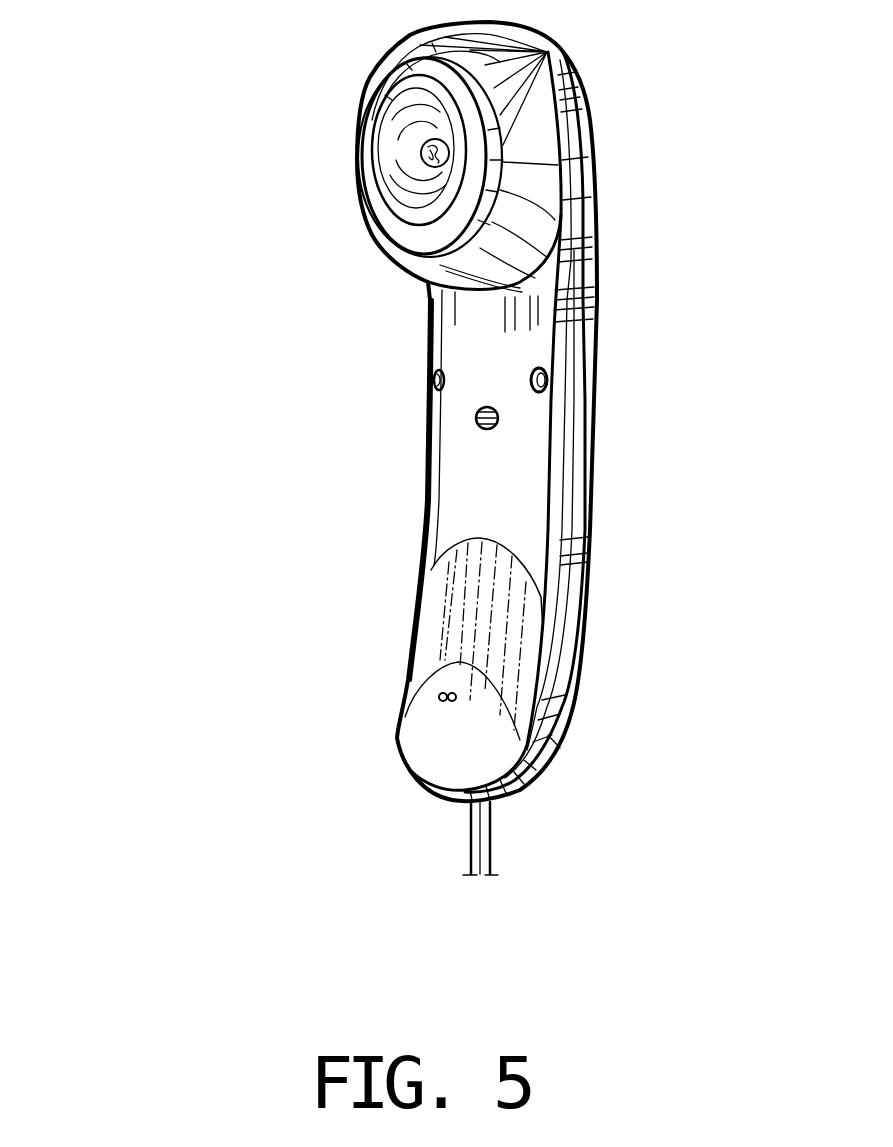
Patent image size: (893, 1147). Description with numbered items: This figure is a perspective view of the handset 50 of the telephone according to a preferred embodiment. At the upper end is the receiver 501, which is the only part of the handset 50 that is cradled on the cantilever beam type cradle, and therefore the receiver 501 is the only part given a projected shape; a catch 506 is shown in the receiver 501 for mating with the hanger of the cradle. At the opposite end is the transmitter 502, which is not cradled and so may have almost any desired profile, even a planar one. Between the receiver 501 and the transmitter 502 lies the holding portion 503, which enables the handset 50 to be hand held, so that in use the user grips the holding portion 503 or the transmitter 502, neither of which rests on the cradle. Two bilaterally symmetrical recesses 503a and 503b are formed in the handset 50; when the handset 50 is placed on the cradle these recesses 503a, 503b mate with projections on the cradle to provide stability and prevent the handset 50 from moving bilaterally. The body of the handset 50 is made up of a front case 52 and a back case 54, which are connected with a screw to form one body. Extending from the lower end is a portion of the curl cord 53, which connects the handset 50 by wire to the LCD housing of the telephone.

The handset 50 is at (383, 493).
The receiver 501 is at (424, 160).
The transmitter 502 is at (437, 700).
The holding portion 503 is at (523, 470).
The recess 503a is at (427, 388).
The recess 503b is at (536, 394).
The catch 506 is at (513, 298).
The front case 52 is at (558, 678).
The curl cord 53 is at (493, 842).
The back case 54 is at (573, 610).